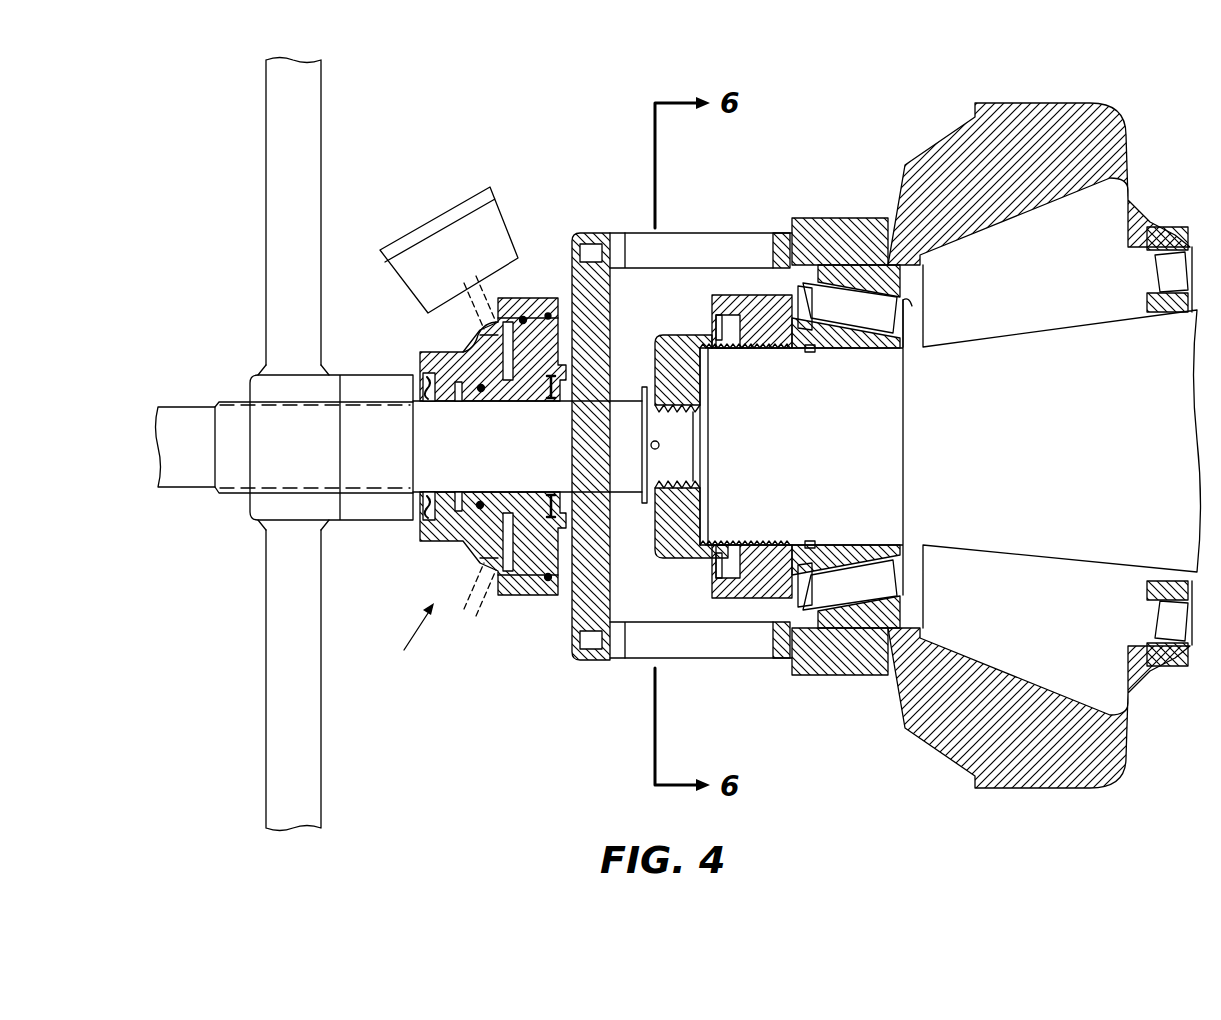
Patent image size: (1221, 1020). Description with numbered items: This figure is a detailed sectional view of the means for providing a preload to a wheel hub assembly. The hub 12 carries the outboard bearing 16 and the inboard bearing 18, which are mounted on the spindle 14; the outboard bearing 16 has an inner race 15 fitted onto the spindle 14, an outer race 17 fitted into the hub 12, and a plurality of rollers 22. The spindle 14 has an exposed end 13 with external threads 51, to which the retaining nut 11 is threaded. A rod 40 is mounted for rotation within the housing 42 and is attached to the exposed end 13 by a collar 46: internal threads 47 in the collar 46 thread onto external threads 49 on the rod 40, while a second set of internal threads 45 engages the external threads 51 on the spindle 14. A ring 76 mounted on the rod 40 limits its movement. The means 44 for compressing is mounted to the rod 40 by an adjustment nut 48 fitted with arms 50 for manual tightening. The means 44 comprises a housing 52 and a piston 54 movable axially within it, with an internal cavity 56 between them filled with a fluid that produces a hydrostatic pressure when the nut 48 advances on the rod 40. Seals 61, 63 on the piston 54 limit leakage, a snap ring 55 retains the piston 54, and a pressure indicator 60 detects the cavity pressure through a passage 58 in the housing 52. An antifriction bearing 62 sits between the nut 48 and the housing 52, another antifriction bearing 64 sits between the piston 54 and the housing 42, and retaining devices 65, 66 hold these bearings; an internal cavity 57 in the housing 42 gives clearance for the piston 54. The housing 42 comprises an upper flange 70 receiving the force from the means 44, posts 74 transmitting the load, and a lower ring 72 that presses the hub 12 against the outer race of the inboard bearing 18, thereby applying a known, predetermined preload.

The retaining nut 11 is at (752, 592).
The hub 12 is at (903, 166).
The exposed end 13 is at (712, 455).
The spindle 14 is at (835, 454).
The inner race 15 is at (843, 350).
The outboard bearing 16 is at (930, 309).
The outer race 17 is at (866, 264).
The inboard bearing 18 is at (1135, 331).
The rollers 22 is at (861, 319).
The rod 40 is at (192, 412).
The housing 42 is at (675, 230).
The means for compressing 44 is at (409, 636).
The internal threads 45 is at (716, 350).
The collar 46 is at (676, 558).
The internal threads 47 is at (668, 412).
The adjustment nut 48 is at (372, 518).
The external threads 49 is at (668, 484).
The arms 50 is at (272, 185).
The external threads 51 is at (781, 540).
The housing 52 is at (432, 346).
The piston 54 is at (540, 345).
The snap ring 55 is at (548, 582).
The internal cavity 56 is at (510, 578).
The internal cavity 57 is at (458, 512).
The passage 58 is at (488, 322).
The pressure indicator 60 is at (413, 238).
The seal 61 is at (481, 502).
The antifriction bearing 62 is at (426, 388).
The seal 63 is at (526, 316).
The antifriction bearing 64 is at (556, 402).
The retaining device 65 is at (427, 505).
The retaining device 66 is at (548, 504).
The upper flange 70 is at (590, 232).
The ring 72 is at (780, 232).
The posts 74 is at (746, 232).
The ring 76 is at (641, 398).